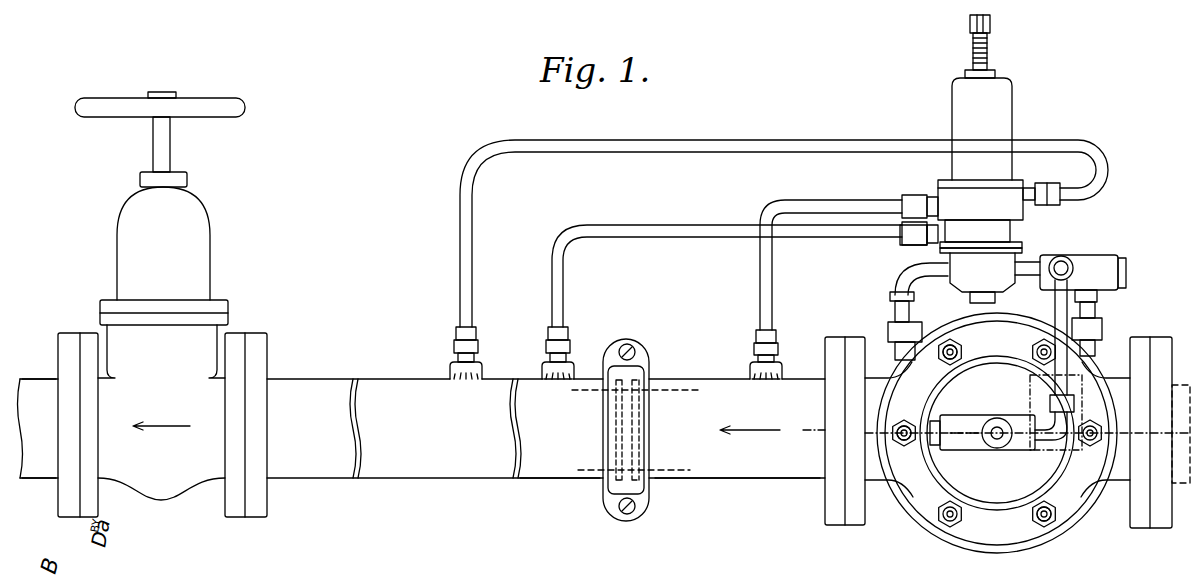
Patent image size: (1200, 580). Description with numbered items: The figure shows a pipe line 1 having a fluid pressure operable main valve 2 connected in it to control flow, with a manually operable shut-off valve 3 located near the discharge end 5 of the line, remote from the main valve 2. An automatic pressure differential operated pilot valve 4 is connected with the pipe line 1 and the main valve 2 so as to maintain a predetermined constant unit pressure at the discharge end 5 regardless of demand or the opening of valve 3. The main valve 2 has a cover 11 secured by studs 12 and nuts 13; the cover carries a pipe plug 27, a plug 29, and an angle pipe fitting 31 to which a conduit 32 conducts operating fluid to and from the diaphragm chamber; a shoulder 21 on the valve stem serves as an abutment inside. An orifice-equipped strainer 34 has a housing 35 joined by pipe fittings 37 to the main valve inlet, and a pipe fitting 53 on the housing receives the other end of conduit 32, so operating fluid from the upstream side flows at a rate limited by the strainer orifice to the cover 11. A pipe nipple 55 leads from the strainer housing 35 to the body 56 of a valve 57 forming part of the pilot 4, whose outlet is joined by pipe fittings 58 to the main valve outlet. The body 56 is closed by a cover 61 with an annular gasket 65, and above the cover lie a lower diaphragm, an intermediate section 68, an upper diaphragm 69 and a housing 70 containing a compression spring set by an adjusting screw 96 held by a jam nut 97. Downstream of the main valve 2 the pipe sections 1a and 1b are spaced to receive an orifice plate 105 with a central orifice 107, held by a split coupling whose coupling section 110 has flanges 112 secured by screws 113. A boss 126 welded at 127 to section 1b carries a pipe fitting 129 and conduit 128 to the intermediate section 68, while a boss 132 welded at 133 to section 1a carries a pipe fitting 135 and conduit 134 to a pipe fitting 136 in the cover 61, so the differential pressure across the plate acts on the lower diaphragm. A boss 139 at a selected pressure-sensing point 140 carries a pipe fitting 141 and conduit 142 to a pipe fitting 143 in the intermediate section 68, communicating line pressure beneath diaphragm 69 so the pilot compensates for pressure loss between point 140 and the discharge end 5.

The pipe line 1 is at (470, 481).
The pipe section 1a is at (558, 472).
The pipe section 1b is at (712, 466).
The main valve 2 is at (1183, 445).
The shut-off valve 3 is at (203, 246).
The pilot valve 4 is at (1015, 112).
The discharge end 5 is at (42, 390).
The cover 11 is at (920, 515).
The studs 12 is at (904, 424).
The nuts 13 is at (904, 446).
The shoulder 21 is at (965, 546).
The pipe plug 27 is at (998, 428).
The plug 29 is at (946, 418).
The angle pipe fitting 31 is at (1053, 436).
The conduit 32 is at (1053, 300).
The orifice-equipped strainer 34 is at (1127, 277).
The strainer housing 35 is at (1095, 258).
The pipe fittings 37 is at (1104, 332).
The pipe fitting 53 is at (1070, 262).
The pipe nipple 55 is at (1020, 268).
The valve body 56 is at (975, 283).
The valve 57 is at (920, 278).
The pipe fittings 58 is at (892, 328).
The cover 61 is at (1020, 233).
The annular gasket 65 is at (1020, 245).
The intermediate section 68 is at (930, 188).
The diaphragm 69 is at (1010, 185).
The housing 70 is at (953, 100).
The adjusting screw 96 is at (990, 22).
The jam nut 97 is at (988, 55).
The orifice plate 105 is at (632, 432).
The orifice 107 is at (622, 400).
The coupling section 110 is at (632, 462).
The flanges 112 is at (640, 358).
The screws 113 is at (629, 347).
The boss 126 is at (782, 370).
The weld 127 is at (753, 382).
The conduit 128 is at (762, 280).
The pipe fitting 129 is at (750, 368).
The boss 132 is at (547, 372).
The weld 133 is at (552, 382).
The conduit 134 is at (637, 234).
The pipe fitting 135 is at (550, 352).
The pipe fitting 136 is at (920, 250).
The boss 139 is at (450, 372).
The pressure-sensing point 140 is at (466, 382).
The pipe fitting 141 is at (457, 350).
The conduit 142 is at (652, 150).
The pipe fitting 143 is at (1030, 190).